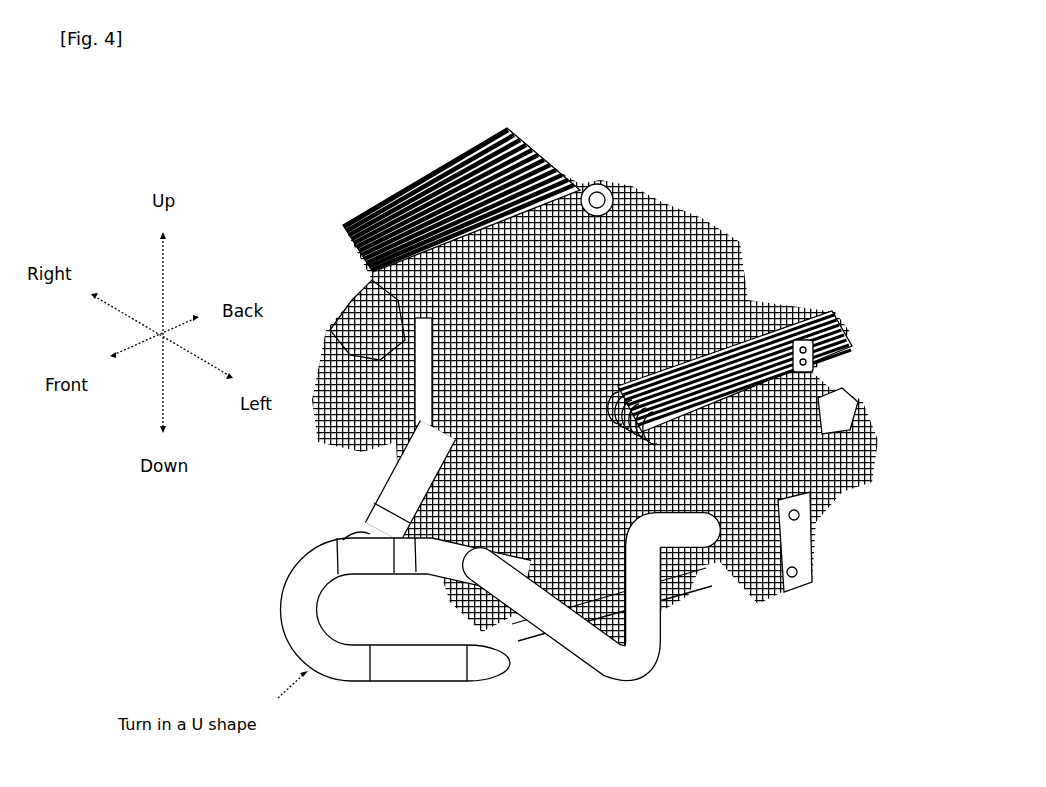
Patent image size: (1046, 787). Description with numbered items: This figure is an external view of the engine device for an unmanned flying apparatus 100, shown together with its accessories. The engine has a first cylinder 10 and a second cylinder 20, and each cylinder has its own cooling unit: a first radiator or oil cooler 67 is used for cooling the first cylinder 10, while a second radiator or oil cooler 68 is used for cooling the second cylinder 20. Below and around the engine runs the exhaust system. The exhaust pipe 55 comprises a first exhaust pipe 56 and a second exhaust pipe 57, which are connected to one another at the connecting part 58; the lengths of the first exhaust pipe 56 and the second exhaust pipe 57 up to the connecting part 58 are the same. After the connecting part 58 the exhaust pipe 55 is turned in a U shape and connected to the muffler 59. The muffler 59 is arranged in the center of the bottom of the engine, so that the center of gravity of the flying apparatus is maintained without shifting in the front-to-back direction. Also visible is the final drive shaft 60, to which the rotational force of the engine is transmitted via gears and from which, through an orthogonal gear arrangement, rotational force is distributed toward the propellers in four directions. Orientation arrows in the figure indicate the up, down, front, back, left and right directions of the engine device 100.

The first cylinder 10 is at (842, 540).
The second cylinder 20 is at (355, 303).
The exhaust pipe 55 is at (407, 701).
The first exhaust pipe 56 is at (403, 476).
The second exhaust pipe 57 is at (630, 685).
The connecting part 58 is at (322, 541).
The muffler 59 is at (700, 600).
The final drive shaft 60 is at (597, 183).
The first radiator or oil cooler 67 is at (799, 307).
The second radiator or oil cooler 68 is at (462, 160).
The engine device for an unmanned flying apparatus 100 is at (764, 150).